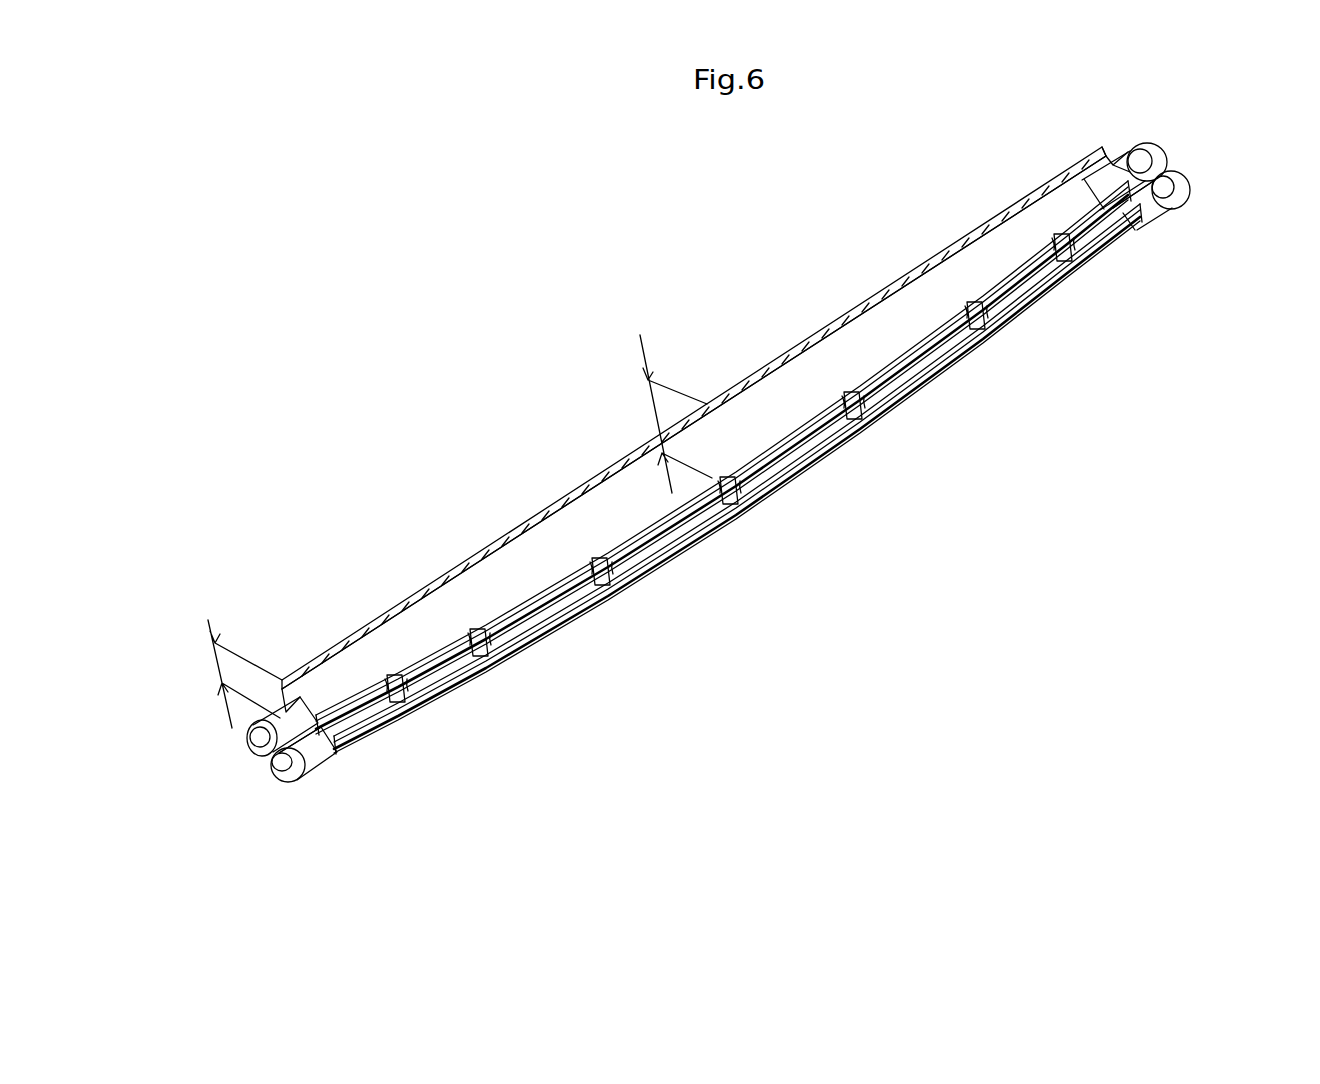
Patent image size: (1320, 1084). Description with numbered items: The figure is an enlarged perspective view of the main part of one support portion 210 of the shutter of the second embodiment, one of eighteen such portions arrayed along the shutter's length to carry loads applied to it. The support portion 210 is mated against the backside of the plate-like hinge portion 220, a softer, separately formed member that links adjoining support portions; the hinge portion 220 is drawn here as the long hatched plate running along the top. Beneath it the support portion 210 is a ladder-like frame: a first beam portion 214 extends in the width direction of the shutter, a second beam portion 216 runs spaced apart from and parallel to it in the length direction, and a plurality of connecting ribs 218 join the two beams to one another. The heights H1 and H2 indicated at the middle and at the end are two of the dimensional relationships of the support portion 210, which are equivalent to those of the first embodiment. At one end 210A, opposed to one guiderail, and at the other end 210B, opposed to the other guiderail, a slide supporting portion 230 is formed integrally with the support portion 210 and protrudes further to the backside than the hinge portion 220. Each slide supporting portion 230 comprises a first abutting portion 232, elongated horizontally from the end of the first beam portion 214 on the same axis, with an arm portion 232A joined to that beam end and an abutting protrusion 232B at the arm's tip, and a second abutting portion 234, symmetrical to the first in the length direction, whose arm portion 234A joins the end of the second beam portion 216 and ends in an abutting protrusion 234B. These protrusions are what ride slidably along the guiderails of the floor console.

The support portion 210 is at (728, 493).
The one end of the support portion 210A is at (318, 762).
The another end of the support portion 210B is at (1132, 206).
The first beam portion 214 is at (830, 345).
The second beam portion 216 is at (822, 462).
The connecting rib 218 is at (396, 705).
The hinge portion 220 is at (492, 542).
The slide supporting portion 230 is at (709, 483).
The first abutting portion 232 is at (1178, 159).
The arm portion 232A is at (1118, 163).
The abutting protrusion 232B is at (1134, 152).
The second abutting portion 234 is at (722, 504).
The arm portion 234A is at (1153, 217).
The abutting protrusion 234B is at (1190, 199).
The dimension H1 is at (676, 400).
The dimension H2 is at (245, 652).